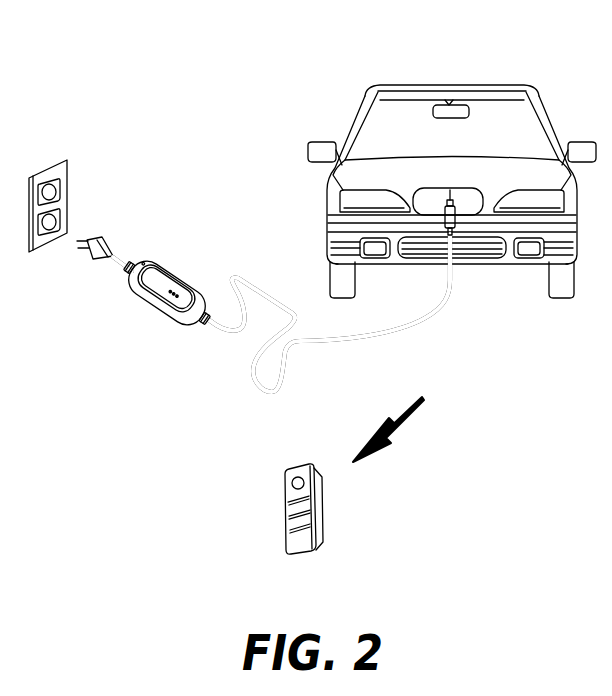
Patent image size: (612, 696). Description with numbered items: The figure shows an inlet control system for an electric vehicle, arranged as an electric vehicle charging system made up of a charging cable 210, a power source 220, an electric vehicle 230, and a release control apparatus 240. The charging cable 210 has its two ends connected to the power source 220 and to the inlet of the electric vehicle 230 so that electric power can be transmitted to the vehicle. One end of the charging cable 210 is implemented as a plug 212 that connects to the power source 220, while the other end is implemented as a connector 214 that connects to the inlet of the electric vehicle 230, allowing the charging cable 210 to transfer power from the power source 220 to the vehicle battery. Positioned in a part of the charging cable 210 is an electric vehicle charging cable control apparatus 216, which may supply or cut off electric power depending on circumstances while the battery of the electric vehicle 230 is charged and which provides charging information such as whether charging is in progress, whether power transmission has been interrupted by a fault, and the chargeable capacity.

The charging cable 210 is at (235, 280).
The plug 212 is at (120, 263).
The connector 214 is at (452, 197).
The electric vehicle charging cable control apparatus 216 is at (177, 280).
The power source 220 is at (63, 160).
The electric vehicle 230 is at (485, 85).
The release control apparatus 240 is at (308, 465).